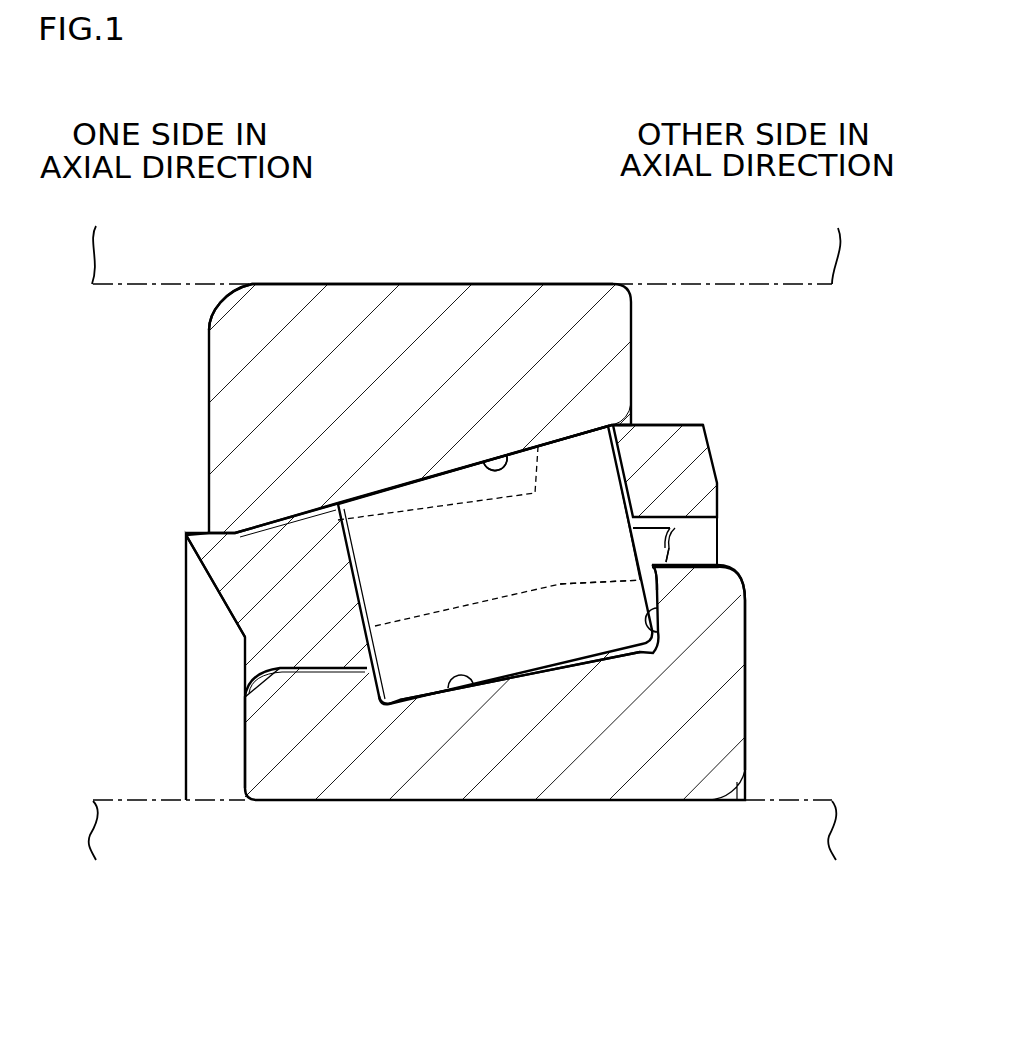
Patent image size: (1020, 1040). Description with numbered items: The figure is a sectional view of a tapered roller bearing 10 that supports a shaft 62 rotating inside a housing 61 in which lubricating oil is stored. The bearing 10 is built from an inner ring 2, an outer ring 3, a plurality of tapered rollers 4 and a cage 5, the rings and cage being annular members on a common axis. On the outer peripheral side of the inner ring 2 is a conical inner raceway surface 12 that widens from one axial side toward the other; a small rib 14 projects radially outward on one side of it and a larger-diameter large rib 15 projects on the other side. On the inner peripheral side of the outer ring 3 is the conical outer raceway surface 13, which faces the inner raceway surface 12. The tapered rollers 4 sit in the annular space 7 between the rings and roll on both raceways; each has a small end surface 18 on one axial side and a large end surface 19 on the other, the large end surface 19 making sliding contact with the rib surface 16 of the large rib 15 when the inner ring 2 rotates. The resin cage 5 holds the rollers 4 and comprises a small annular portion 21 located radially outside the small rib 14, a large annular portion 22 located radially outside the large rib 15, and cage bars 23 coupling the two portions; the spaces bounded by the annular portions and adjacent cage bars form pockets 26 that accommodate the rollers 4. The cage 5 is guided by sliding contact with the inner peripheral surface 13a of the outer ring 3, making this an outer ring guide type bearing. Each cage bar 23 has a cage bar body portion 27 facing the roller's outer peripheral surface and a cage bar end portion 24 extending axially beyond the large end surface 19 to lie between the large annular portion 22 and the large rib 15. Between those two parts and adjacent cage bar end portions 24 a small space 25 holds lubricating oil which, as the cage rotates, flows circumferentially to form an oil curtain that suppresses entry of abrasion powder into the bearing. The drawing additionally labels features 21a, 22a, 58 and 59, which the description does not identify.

The inner ring 2 is at (634, 802).
The outer ring 3 is at (420, 283).
The tapered rollers 4 is at (546, 655).
The cage 5 is at (215, 602).
The annular space 7 is at (303, 509).
The tapered roller bearing 10 is at (563, 282).
The inner raceway surface 12 is at (461, 690).
The outer raceway surface 13 is at (482, 457).
The inner peripheral surface 13a is at (497, 347).
The small rib 14 is at (323, 682).
The large rib 15 is at (700, 583).
The rib surface 16 is at (650, 618).
The small end surface 18 is at (343, 563).
The large end surface 19 is at (703, 425).
The small annular portion 21 is at (267, 555).
The contact surface of first annular member 21a is at (255, 524).
The large annular portion 22 is at (688, 495).
The contact surface of second annular member 22a is at (660, 425).
The cage bars 23 is at (417, 635).
The cage bar end portion 24 is at (672, 553).
The small space 25 is at (665, 544).
The pockets 26 is at (404, 490).
The cage bar body portion 27 is at (588, 553).
The outer ring end face 58 is at (209, 360).
The inner ring end face 59 is at (243, 744).
The housing 61 is at (127, 284).
The shaft 62 is at (126, 798).